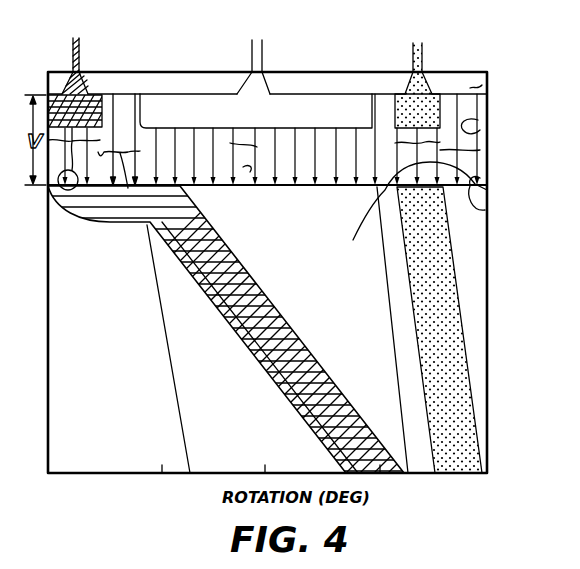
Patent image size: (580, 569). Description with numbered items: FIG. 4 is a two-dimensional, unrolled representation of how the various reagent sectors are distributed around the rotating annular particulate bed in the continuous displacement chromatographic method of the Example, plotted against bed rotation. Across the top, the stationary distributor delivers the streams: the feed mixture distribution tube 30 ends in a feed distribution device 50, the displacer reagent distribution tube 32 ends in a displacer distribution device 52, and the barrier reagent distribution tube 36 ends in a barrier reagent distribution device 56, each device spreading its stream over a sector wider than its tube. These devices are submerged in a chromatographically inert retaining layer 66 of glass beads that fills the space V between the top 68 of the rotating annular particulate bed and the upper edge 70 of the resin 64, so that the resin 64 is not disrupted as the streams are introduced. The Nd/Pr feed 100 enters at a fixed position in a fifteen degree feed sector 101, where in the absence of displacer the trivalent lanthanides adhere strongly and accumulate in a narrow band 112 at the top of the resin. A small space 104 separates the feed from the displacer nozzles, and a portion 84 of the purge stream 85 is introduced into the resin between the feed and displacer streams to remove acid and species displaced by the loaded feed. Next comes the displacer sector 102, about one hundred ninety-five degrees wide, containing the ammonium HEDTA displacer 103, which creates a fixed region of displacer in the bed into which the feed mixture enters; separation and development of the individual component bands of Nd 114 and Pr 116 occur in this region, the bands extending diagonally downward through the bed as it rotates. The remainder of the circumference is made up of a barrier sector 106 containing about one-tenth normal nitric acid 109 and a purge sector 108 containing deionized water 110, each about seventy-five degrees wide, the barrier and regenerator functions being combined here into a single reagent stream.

The feed mixture distribution tube 30 is at (77, 42).
The displacer reagent distribution tube 32 is at (262, 52).
The barrier reagent distribution tube 36 is at (422, 50).
The feed distribution device 50 is at (103, 100).
The displacer distribution device 52 is at (298, 100).
The barrier reagent distribution device 56 is at (430, 103).
The resin 64 is at (477, 293).
The chromatographically inert retaining layer 66 is at (480, 150).
The top of the rotating annular particulate bed 68 is at (482, 85).
The upper edge of the resin 70 is at (487, 200).
The portion of the purge stream 84 is at (123, 103).
The purge stream 85 is at (200, 75).
The Nd/Pr feed 100 is at (70, 200).
The feed sector 101 is at (58, 194).
The displacer sector 102 is at (257, 150).
The HEDTA displacer 103 is at (243, 167).
The space 104 is at (128, 190).
The barrier sector 106 is at (487, 183).
The purge sector 108 is at (480, 130).
The nitric acid 109 is at (409, 215).
The deionized water 110 is at (487, 205).
The narrow band 112 is at (148, 225).
The Nd band 114 is at (297, 392).
The Pr band 116 is at (335, 387).